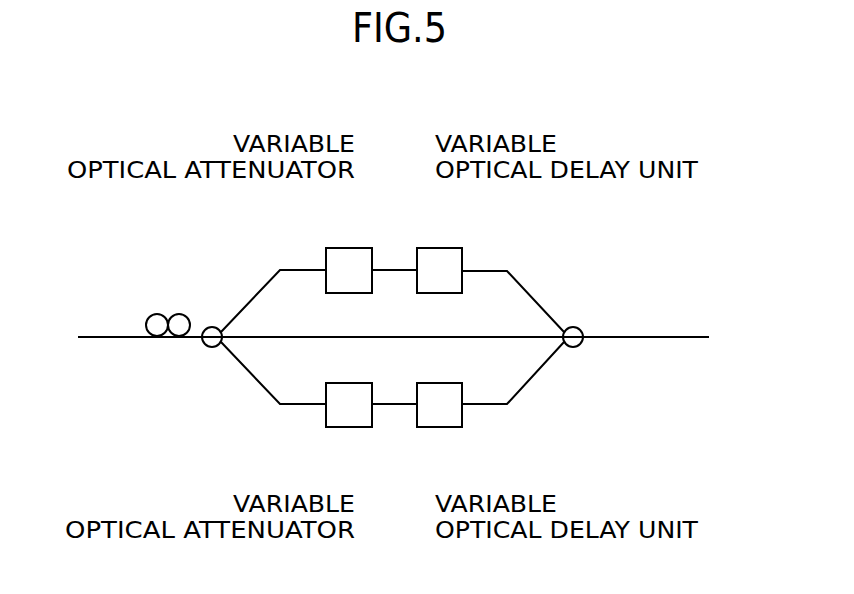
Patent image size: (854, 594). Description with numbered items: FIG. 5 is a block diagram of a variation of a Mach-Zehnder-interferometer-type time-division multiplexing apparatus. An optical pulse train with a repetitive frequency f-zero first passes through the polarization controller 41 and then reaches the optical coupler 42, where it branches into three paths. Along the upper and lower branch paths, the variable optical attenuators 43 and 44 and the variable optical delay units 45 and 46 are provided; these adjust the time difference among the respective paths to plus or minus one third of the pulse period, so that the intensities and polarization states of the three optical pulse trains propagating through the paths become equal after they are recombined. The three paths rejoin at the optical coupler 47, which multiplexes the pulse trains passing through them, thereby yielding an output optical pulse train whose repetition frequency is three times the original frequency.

The polarization controller 41 is at (158, 312).
The optical coupler 42 is at (210, 327).
The variable optical attenuator 43 is at (344, 248).
The variable optical attenuator 44 is at (344, 428).
The variable optical delay unit 45 is at (434, 248).
The variable optical delay unit 46 is at (434, 428).
The optical coupler 47 is at (571, 328).